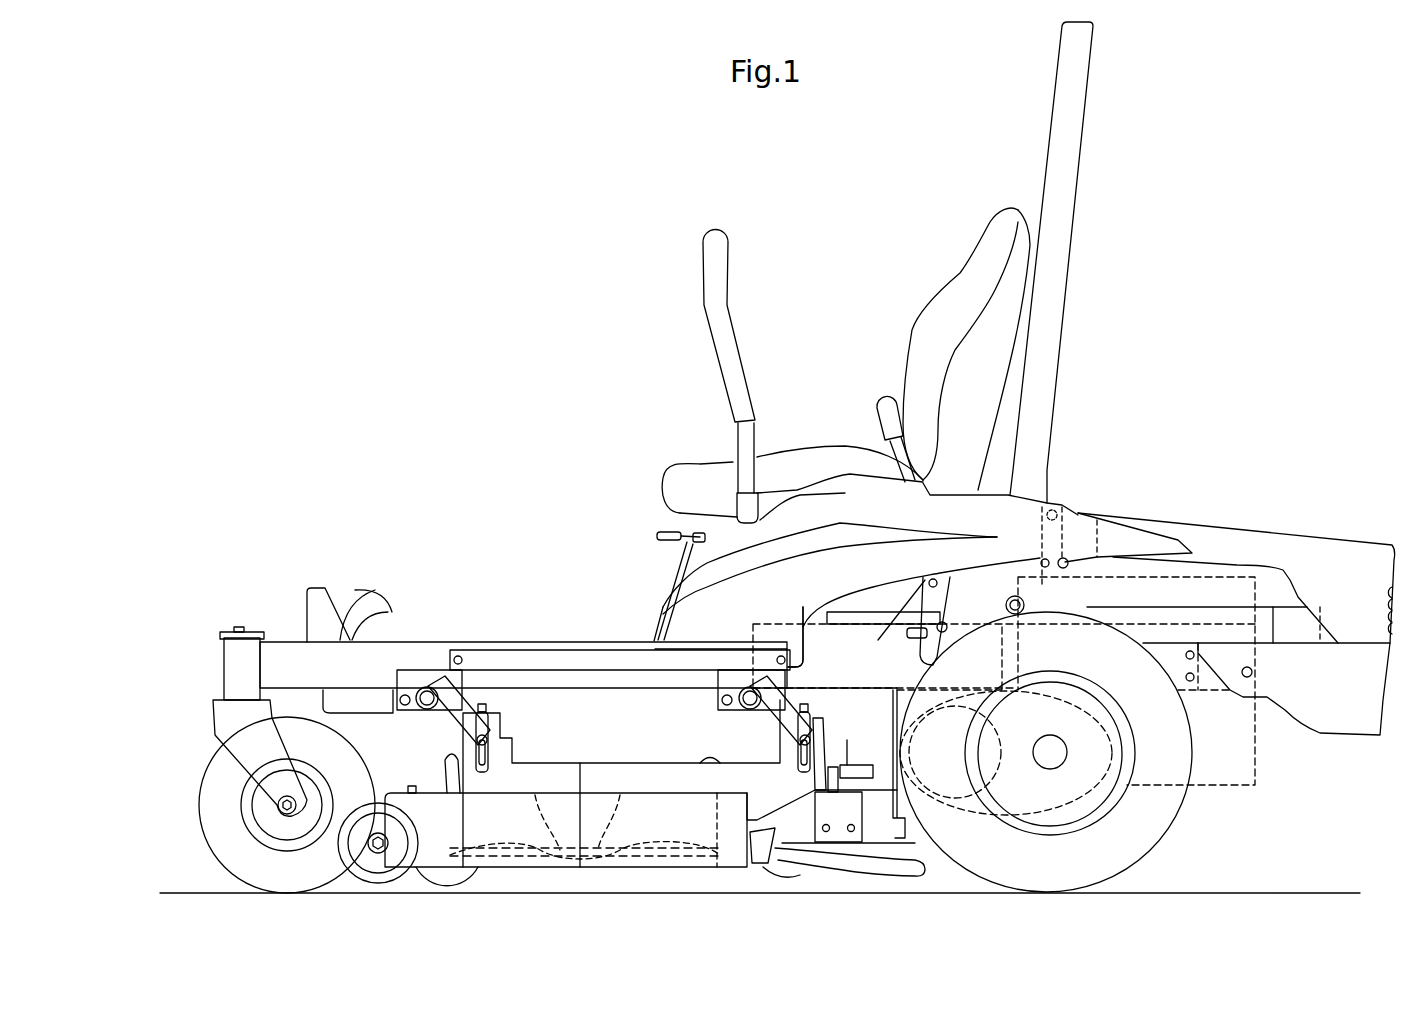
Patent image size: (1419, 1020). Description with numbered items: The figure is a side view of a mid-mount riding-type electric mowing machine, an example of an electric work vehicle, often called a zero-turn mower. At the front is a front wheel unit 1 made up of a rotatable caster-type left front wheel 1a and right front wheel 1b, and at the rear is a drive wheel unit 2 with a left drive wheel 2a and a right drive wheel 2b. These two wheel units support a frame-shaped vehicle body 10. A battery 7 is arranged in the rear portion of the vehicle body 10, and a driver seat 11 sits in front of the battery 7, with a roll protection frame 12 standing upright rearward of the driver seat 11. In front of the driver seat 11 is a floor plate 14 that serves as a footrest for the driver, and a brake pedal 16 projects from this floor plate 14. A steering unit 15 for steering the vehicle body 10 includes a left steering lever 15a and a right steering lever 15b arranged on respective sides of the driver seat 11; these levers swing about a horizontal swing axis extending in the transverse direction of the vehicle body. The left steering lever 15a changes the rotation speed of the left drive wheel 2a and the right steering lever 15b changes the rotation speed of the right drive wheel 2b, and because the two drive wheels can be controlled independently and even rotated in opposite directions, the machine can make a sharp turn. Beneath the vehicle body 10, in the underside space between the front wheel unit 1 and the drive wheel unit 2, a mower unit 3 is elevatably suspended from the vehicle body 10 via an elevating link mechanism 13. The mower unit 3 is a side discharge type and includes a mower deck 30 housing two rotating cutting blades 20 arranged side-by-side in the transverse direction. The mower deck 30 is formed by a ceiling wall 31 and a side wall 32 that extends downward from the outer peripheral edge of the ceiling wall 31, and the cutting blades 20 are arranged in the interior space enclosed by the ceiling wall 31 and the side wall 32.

The front wheel unit 1 is at (241, 805).
The left front wheel 1a is at (241, 805).
The right front wheel 1b is at (208, 812).
The drive wheel unit 2 is at (1086, 752).
The left drive wheel 2a is at (1086, 752).
The right drive wheel 2b is at (1172, 807).
The mower unit 3 is at (631, 809).
The battery 7 is at (1255, 770).
The vehicle body 10 is at (289, 631).
The driver seat 11 is at (918, 322).
The roll protection frame 12 is at (1078, 132).
The elevating link mechanism 13 is at (440, 663).
The floor plate 14 is at (533, 645).
The steering unit 15 is at (629, 361).
The left steering lever 15a is at (629, 361).
The right steering lever 15b is at (707, 278).
The brake pedal 16 is at (380, 595).
The cutting blade 20 is at (655, 850).
The mower deck 30 is at (630, 792).
The ceiling wall 31 is at (430, 793).
The side wall 32 is at (718, 853).